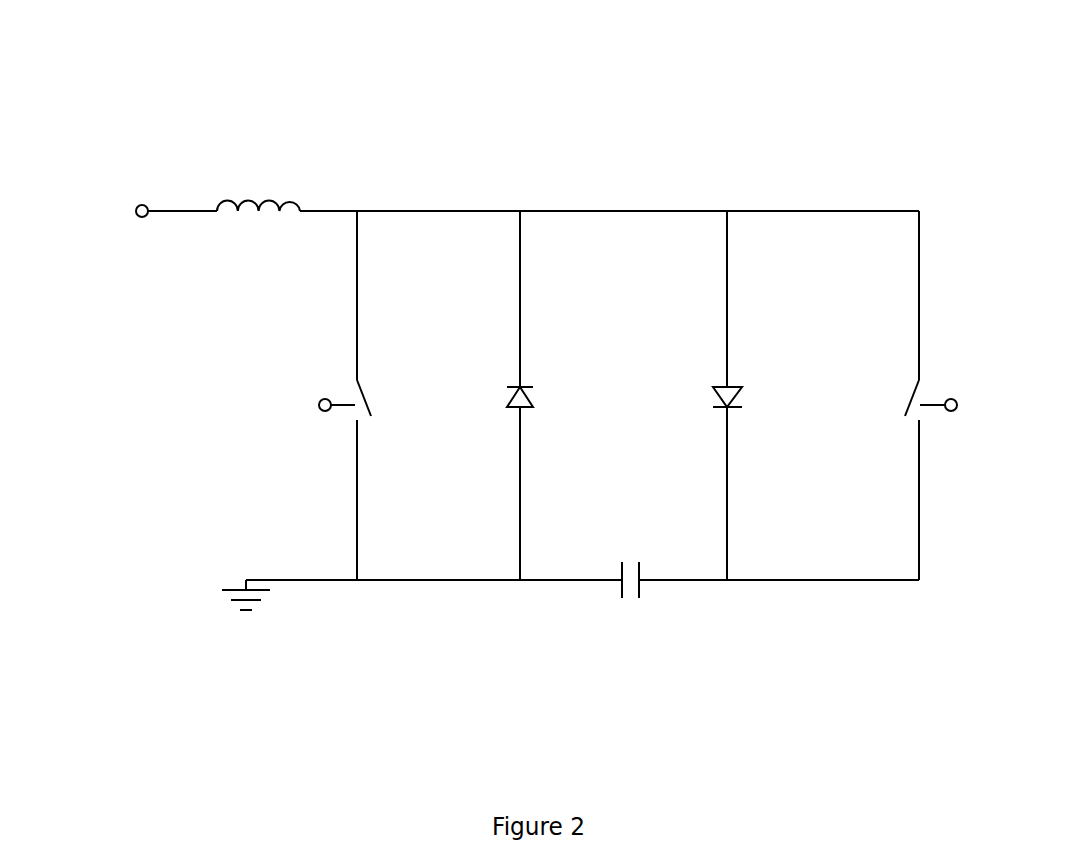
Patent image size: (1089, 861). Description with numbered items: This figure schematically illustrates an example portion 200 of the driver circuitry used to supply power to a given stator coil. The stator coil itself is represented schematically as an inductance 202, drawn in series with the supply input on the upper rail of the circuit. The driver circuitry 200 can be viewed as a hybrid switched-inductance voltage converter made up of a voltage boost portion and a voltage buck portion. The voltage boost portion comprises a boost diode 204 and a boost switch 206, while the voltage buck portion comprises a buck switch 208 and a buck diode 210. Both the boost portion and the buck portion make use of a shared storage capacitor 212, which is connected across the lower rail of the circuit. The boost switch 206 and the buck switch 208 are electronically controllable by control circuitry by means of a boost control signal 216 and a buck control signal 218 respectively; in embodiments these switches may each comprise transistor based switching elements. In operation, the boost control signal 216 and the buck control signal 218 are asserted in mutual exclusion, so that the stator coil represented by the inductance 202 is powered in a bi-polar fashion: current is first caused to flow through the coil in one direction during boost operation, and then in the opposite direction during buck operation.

The portion of the driver circuitry 200 is at (896, 63).
The inductance 202 is at (250, 191).
The boost diode 204 is at (735, 384).
The boost switch 206 is at (363, 393).
The buck switch 208 is at (912, 393).
The buck diode 210 is at (528, 384).
The storage capacitor 212 is at (618, 563).
The boost control signal 216 is at (278, 392).
The buck control signal 218 is at (1010, 392).